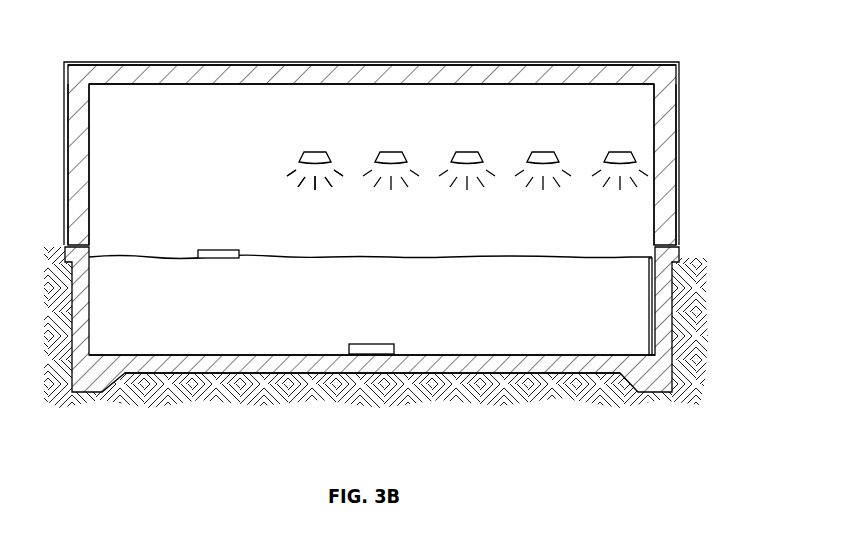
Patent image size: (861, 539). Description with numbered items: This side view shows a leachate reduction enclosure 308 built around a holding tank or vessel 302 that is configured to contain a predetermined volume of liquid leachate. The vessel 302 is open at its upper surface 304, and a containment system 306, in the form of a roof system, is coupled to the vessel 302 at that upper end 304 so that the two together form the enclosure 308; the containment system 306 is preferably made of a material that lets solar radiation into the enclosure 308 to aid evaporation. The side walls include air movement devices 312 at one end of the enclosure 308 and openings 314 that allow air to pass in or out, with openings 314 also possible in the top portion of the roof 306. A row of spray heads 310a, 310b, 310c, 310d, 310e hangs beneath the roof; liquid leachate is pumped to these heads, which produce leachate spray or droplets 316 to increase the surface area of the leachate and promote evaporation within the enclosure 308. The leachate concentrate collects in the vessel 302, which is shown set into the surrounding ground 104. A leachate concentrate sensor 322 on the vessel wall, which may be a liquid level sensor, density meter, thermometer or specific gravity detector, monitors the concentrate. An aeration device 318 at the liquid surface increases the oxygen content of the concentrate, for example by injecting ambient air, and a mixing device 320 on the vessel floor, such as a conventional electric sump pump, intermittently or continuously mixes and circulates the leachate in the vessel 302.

The ground 104 is at (163, 398).
The holding tank or vessel 302 is at (335, 365).
The upper surface 304 is at (668, 252).
The containment system 306 is at (372, 62).
The leachate reduction enclosure 308 is at (658, 35).
The spray head 310a is at (312, 150).
The spray head 310b is at (388, 150).
The spray head 310c is at (464, 150).
The spray head 310d is at (540, 150).
The light source 310e is at (616, 150).
The air movement device 312 is at (680, 180).
The opening 314 is at (203, 69).
The leachate spray or droplets 316 is at (322, 187).
The aeration device 318 is at (218, 253).
The mixing device 320 is at (378, 346).
The leachate concentrate sensor 322 is at (650, 292).